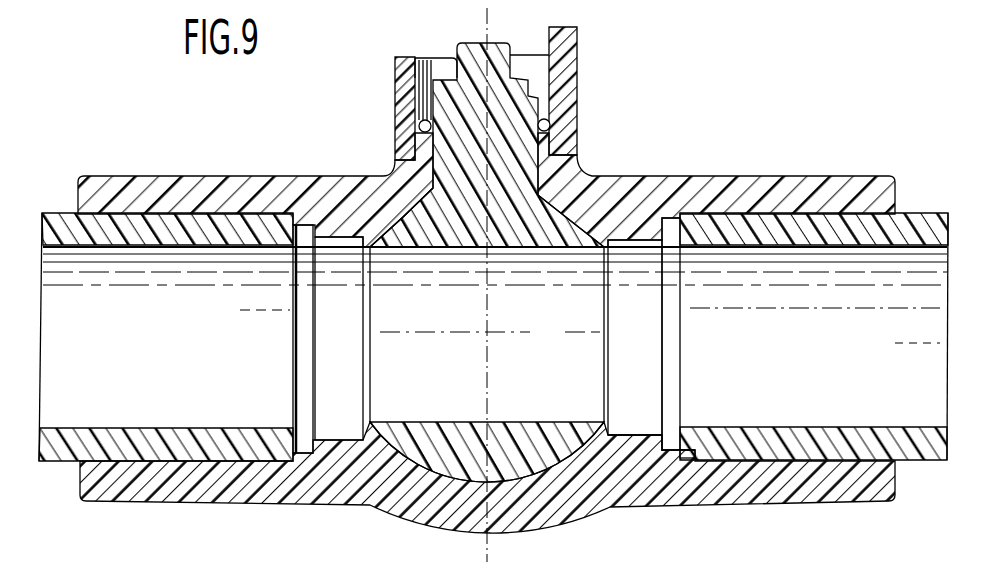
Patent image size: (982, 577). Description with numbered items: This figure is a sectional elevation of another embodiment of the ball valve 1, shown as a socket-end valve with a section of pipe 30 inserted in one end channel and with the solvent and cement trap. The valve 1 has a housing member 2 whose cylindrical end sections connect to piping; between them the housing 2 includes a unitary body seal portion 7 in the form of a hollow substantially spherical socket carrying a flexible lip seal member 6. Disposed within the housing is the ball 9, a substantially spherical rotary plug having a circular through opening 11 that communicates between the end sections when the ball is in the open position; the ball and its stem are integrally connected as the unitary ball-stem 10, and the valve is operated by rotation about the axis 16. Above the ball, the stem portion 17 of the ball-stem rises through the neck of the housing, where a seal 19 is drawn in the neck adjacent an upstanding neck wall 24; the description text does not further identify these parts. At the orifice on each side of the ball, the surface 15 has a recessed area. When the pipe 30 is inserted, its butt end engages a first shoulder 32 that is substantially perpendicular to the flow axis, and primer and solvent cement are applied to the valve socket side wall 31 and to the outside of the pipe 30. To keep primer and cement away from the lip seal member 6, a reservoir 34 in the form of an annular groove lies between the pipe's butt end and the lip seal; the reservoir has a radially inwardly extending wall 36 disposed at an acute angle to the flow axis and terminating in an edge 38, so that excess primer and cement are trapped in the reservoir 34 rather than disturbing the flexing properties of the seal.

The valve 1 is at (382, 97).
The housing member 2 is at (415, 526).
The lip seal member 6 is at (362, 240).
The body seal portion 7 is at (557, 474).
The ball 9 is at (427, 221).
The unitary ball-stem 10 is at (553, 201).
The circular through opening 11 is at (554, 349).
The surface 15 is at (377, 421).
The axis 16 is at (483, 28).
The stem 17 is at (497, 42).
The O-ring seal 19 is at (551, 124).
The neck wall 24 is at (565, 23).
The pipe 30 is at (928, 452).
The valve socket side wall 31 is at (818, 462).
The first shoulder 32 is at (690, 459).
The reservoir 34 is at (662, 448).
The radially inwardly extending wall 36 is at (652, 447).
The edge 38 is at (664, 348).